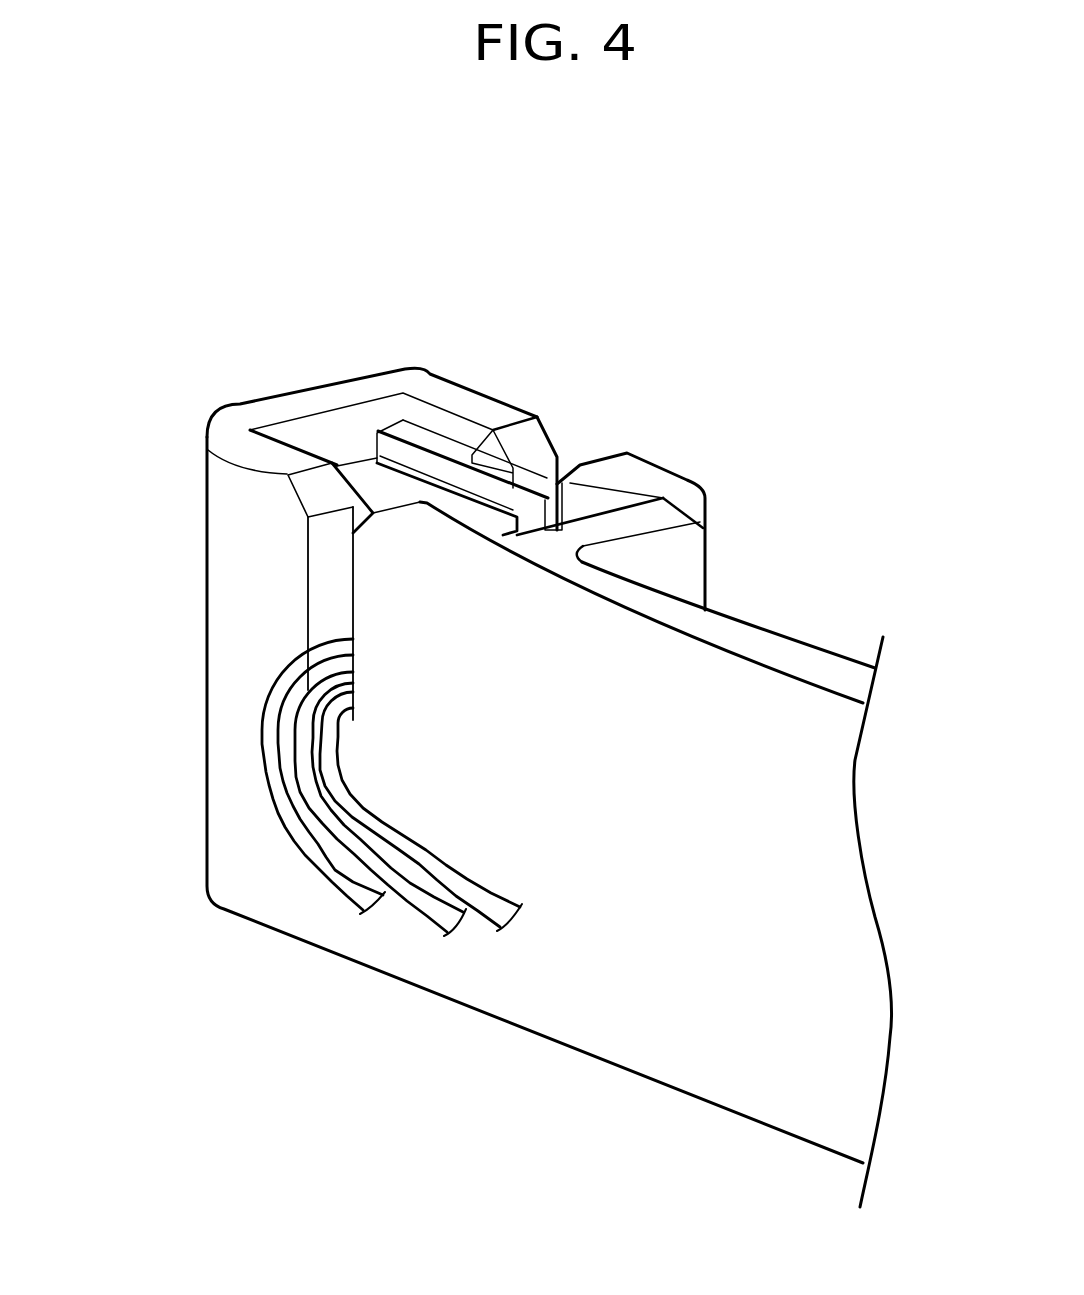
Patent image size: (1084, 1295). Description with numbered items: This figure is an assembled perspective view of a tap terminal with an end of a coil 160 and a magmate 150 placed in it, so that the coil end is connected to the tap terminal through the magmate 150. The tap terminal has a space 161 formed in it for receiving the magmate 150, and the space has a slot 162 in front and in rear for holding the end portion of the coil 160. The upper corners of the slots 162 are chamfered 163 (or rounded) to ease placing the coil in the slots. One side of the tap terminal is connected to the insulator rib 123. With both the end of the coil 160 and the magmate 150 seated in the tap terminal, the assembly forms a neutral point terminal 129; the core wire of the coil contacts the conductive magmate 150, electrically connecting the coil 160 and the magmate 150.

The insulator rib 123 is at (793, 662).
The neutral point terminal 129 is at (668, 474).
The magmate 150 is at (420, 490).
The coil 160 is at (427, 857).
The space 161 is at (348, 452).
The slot 162 is at (332, 595).
The chamfer 163 is at (313, 493).